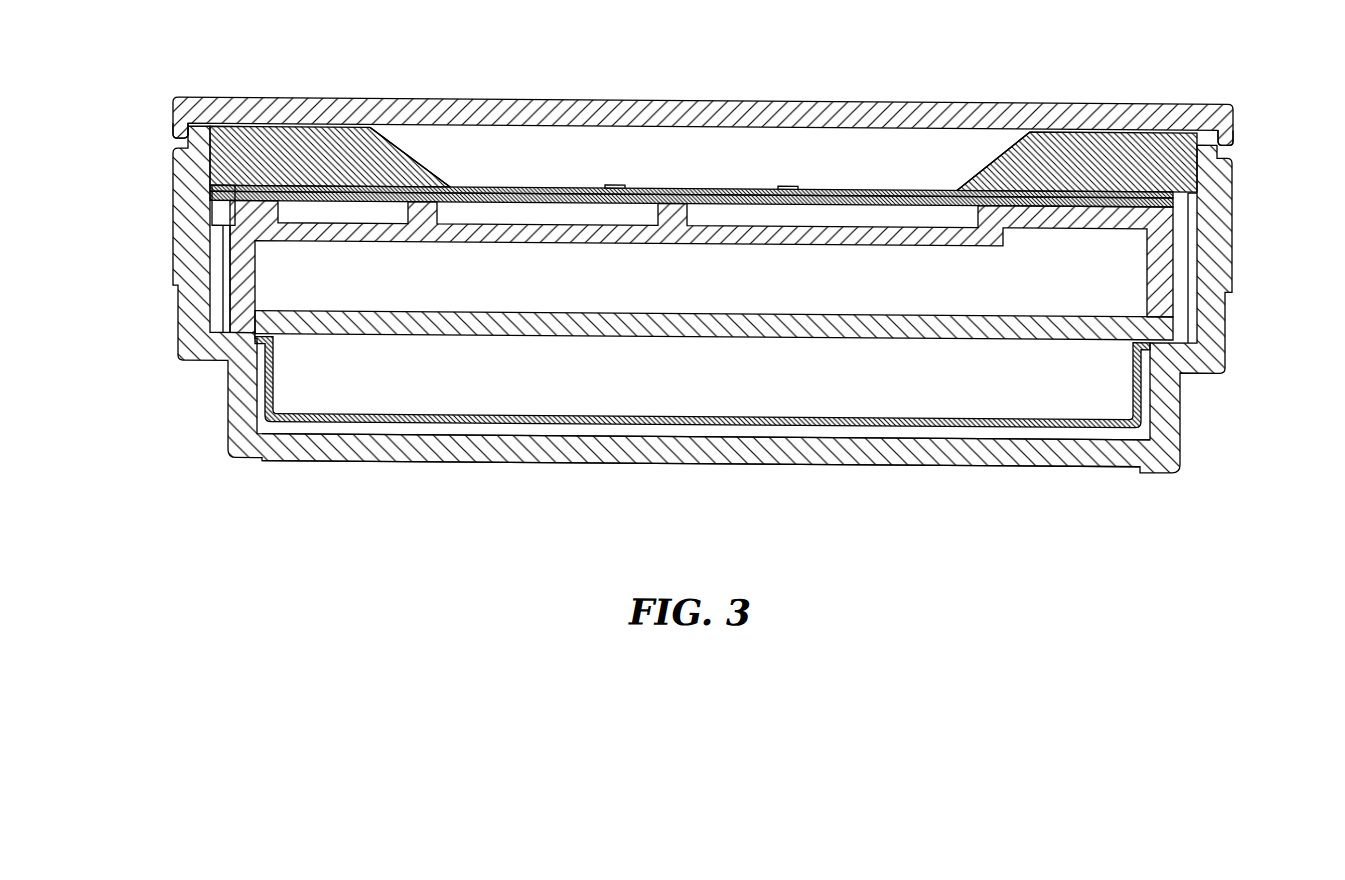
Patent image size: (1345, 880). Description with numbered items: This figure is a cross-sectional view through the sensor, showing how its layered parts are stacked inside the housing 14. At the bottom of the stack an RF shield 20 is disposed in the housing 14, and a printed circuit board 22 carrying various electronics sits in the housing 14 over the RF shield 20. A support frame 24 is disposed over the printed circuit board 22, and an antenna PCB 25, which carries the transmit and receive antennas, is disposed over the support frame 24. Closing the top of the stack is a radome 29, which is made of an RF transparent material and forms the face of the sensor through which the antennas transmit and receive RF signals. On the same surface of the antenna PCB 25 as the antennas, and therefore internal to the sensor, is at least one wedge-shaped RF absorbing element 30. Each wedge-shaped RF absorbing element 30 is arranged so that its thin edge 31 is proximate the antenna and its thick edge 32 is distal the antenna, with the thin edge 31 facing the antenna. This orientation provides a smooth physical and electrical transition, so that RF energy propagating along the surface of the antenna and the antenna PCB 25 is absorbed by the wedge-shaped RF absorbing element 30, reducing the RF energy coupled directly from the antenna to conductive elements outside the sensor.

The housing 14 is at (1228, 266).
The RF shield 20 is at (595, 417).
The printed circuit board 22 is at (415, 320).
The support frame 24 is at (1073, 219).
The antenna PCB 25 is at (1170, 198).
The radome 29 is at (482, 106).
The wedge-shaped RF absorbing element 30 is at (278, 142).
The thin edge 31 is at (445, 188).
The thick edge 32 is at (175, 158).